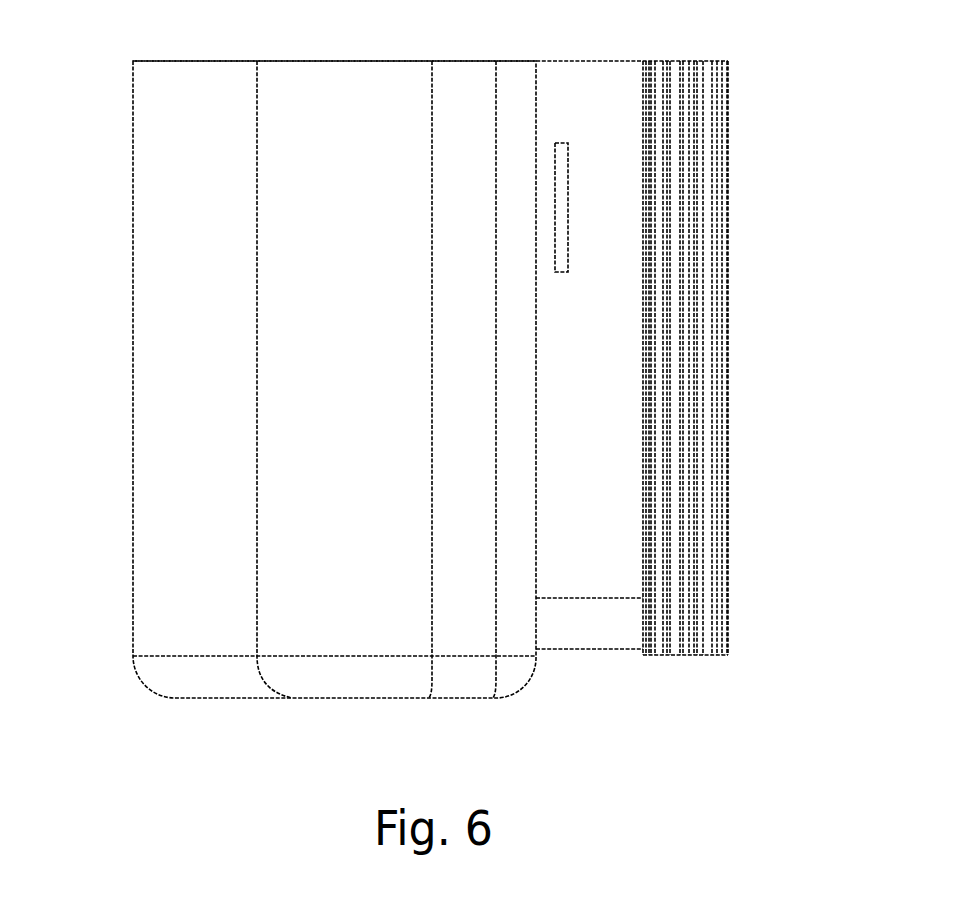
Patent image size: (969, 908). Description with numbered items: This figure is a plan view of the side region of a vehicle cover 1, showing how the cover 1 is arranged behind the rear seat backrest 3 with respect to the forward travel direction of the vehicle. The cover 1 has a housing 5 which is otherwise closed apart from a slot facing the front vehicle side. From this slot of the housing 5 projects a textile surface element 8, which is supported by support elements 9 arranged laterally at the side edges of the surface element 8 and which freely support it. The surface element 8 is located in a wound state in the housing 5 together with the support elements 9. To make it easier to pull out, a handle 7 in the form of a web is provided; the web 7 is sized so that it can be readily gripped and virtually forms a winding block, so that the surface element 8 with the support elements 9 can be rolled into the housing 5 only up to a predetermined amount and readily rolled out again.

The cover 1 is at (765, 353).
The rear seat backrest 3 is at (316, 413).
The housing 5 is at (730, 477).
The handle 7 is at (569, 233).
The textile surface element 8 is at (577, 515).
The support element 9 is at (590, 625).